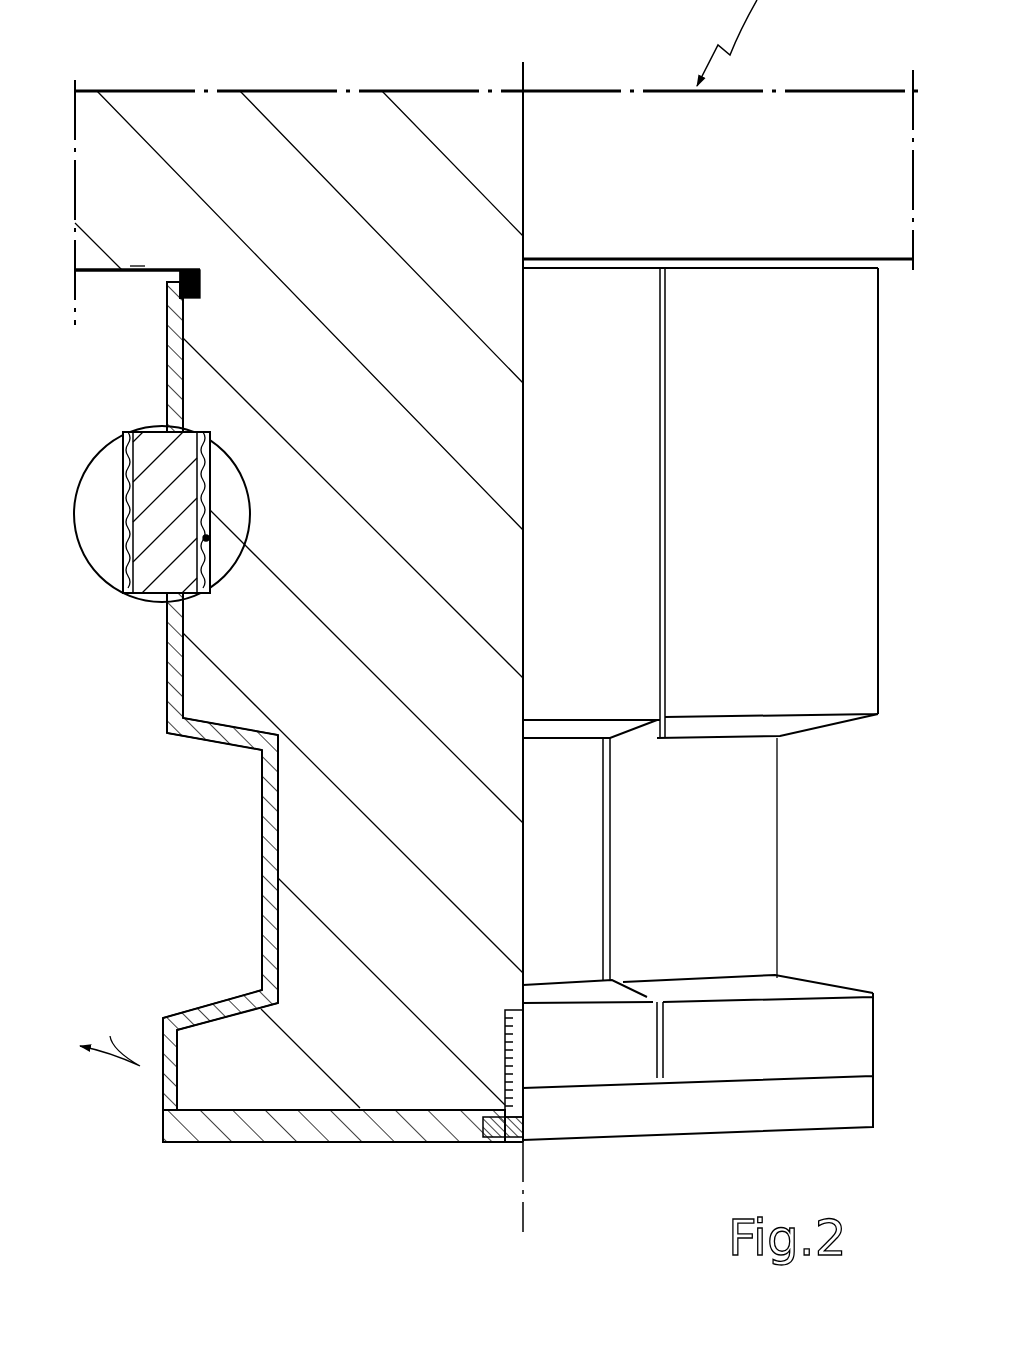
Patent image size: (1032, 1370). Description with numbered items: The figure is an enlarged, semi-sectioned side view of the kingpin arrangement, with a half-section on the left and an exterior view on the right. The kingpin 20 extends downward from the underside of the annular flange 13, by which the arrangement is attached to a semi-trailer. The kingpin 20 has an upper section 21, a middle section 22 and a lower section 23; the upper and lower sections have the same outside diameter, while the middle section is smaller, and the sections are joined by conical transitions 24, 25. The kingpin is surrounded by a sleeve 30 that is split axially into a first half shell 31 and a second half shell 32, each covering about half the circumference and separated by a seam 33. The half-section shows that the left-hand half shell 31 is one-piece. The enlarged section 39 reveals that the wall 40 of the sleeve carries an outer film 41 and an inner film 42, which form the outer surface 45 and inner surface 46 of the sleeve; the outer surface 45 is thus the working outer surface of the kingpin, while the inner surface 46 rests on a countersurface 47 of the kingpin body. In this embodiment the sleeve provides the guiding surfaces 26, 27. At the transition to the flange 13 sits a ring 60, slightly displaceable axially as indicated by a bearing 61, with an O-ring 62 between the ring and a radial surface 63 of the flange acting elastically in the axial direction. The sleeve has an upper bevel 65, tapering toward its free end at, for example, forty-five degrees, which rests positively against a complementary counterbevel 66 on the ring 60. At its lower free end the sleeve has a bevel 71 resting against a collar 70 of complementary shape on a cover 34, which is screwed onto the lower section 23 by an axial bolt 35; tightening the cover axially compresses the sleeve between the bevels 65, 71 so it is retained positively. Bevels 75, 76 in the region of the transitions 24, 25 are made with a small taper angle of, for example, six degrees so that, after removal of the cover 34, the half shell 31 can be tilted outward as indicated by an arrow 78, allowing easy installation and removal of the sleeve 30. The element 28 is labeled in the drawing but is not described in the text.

The annular flange 13 is at (228, 128).
The kingpin 20 is at (381, 1163).
The upper section 21 is at (398, 476).
The middle section 22 is at (383, 903).
The lower section 23 is at (410, 1073).
The conical transition 24 is at (818, 720).
The conical transition 25 is at (796, 992).
The guiding surface 26 is at (164, 692).
The guiding surface 27 is at (268, 882).
The cylinder body 28 is at (881, 502).
The sleeve 30 is at (780, 888).
The first half shell 31 is at (603, 300).
The second half shell 32 is at (852, 358).
The seam 33 is at (668, 418).
The cover 34 is at (285, 1143).
The axial bolt 35 is at (495, 1143).
The enlarged section 39 is at (96, 492).
The wall 40 is at (156, 432).
The outer film 41 is at (128, 440).
The inner film 42 is at (210, 458).
The outer surface 45 is at (122, 572).
The inner surface 46 is at (212, 562).
The countersurface 47 is at (209, 538).
The ring 60 is at (163, 306).
The bearing 61 is at (192, 270).
The O-ring 62 is at (178, 268).
The radial surface 63 is at (138, 268).
The bevel 65 is at (186, 322).
The counterbevel 66 is at (170, 318).
The collar 70 is at (164, 1112).
The bevel 71 is at (180, 1096).
The bevel 75 is at (224, 718).
The bevel 76 is at (270, 1022).
The arrow 78 is at (110, 1036).